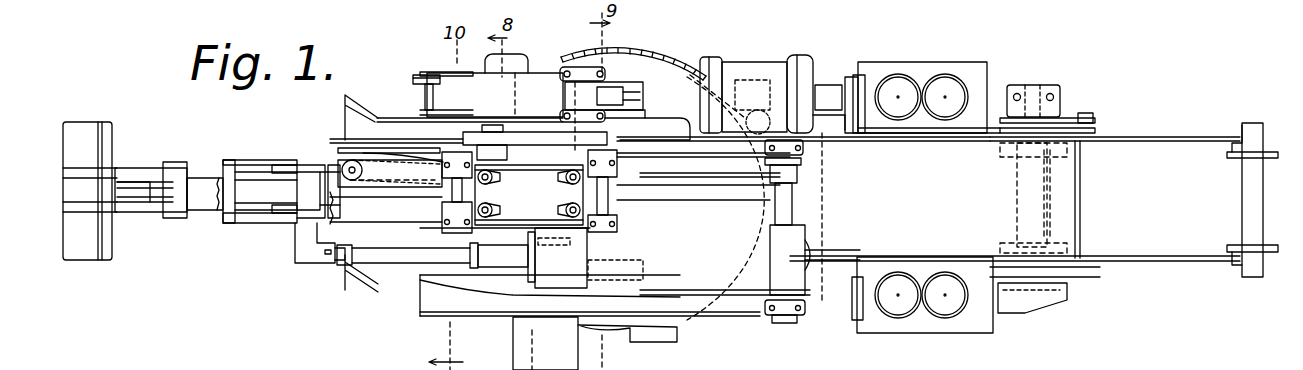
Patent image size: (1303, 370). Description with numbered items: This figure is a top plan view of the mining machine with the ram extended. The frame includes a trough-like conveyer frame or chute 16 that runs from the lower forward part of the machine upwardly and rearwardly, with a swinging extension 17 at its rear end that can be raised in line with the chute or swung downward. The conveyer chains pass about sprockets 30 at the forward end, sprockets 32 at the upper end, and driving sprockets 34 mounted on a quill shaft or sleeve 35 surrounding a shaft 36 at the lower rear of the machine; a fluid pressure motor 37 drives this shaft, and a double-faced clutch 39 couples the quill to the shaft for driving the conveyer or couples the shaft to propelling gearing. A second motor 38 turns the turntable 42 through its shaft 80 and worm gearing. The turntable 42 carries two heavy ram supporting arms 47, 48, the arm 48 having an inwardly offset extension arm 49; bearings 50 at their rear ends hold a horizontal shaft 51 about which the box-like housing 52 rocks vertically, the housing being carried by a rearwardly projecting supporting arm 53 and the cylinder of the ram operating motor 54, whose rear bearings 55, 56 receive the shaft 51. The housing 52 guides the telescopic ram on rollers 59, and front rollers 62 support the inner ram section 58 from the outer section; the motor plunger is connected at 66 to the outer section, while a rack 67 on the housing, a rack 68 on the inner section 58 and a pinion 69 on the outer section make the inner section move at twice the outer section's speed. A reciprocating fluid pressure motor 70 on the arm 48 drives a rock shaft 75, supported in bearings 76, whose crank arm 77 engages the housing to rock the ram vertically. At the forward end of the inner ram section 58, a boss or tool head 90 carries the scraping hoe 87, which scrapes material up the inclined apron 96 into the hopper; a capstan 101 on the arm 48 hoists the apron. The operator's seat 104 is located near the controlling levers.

The conveyer frame or chute 16 is at (965, 140).
The swinging extension 17 is at (1130, 150).
The sprockets 30 is at (558, 240).
The sprockets 32 is at (1250, 160).
The driving sprockets 34 is at (1067, 247).
The quill shaft or sleeve 35 is at (1057, 195).
The shaft 36 is at (1036, 80).
The fluid pressure motor 37 is at (935, 325).
The fluid pressure motor 38 is at (945, 57).
The double-faced clutch 39 is at (1062, 115).
The turntable 42 is at (428, 305).
The ram supporting arm 47 is at (730, 320).
The ram supporting arm 48 is at (535, 78).
The arm 49 is at (696, 170).
The bearings 50 is at (803, 150).
The horizontal shaft 51 is at (792, 206).
The rocking housing 52 is at (529, 195).
The supporting arm 53 is at (660, 182).
The ram operating fluid pressure motor 54 is at (655, 205).
The bearing 55 is at (800, 173).
The bearing 56 is at (805, 240).
The inner ram section 58 is at (207, 210).
The rollers 59 is at (442, 218).
The front rollers 62 is at (302, 196).
The connection 66 is at (298, 263).
The rack 67 is at (390, 146).
The rack 68 is at (396, 187).
The pinion 69 is at (364, 173).
The reciprocating fluid pressure motor 70 is at (750, 75).
The rock shaft 75 is at (622, 52).
The bearings 76 is at (585, 70).
The crank arm 77 is at (527, 138).
The motor shaft 80 is at (830, 85).
The scraping hoe 87 is at (88, 260).
The boss or tool head 90 is at (138, 182).
The inclined apron 96 is at (362, 284).
The capstan 101 is at (424, 98).
The operator's seat 104 is at (545, 343).